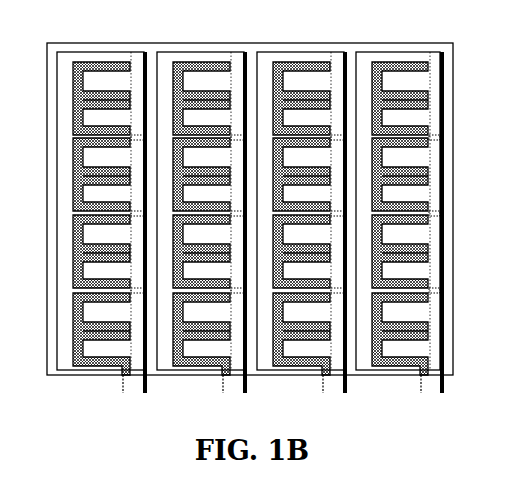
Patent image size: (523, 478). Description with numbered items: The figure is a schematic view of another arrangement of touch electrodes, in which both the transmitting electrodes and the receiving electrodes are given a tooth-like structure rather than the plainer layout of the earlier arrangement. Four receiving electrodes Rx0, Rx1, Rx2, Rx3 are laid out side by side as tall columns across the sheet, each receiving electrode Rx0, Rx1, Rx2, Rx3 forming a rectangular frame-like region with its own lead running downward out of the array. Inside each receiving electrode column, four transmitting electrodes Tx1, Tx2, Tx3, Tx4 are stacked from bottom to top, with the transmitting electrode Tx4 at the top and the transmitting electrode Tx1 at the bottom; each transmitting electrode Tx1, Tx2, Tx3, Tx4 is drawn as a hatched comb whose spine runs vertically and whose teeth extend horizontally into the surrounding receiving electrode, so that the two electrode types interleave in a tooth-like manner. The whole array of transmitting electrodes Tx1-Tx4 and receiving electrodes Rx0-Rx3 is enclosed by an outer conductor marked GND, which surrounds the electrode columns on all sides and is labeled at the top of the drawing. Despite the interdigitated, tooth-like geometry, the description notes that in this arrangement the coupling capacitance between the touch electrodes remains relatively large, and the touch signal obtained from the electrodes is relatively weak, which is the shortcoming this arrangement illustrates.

The ground shield frame GND is at (250, 204).
The receiving electrode Rx0 is at (100, 222).
The receiving electrode Rx1 is at (200, 222).
The receiving electrode Rx2 is at (300, 222).
The receiving electrode Rx3 is at (398, 222).
The transmitting electrode Tx1 is at (250, 343).
The transmitting electrode Tx2 is at (256, 254).
The transmitting electrode Tx3 is at (256, 177).
The transmitting electrode Tx4 is at (256, 101).